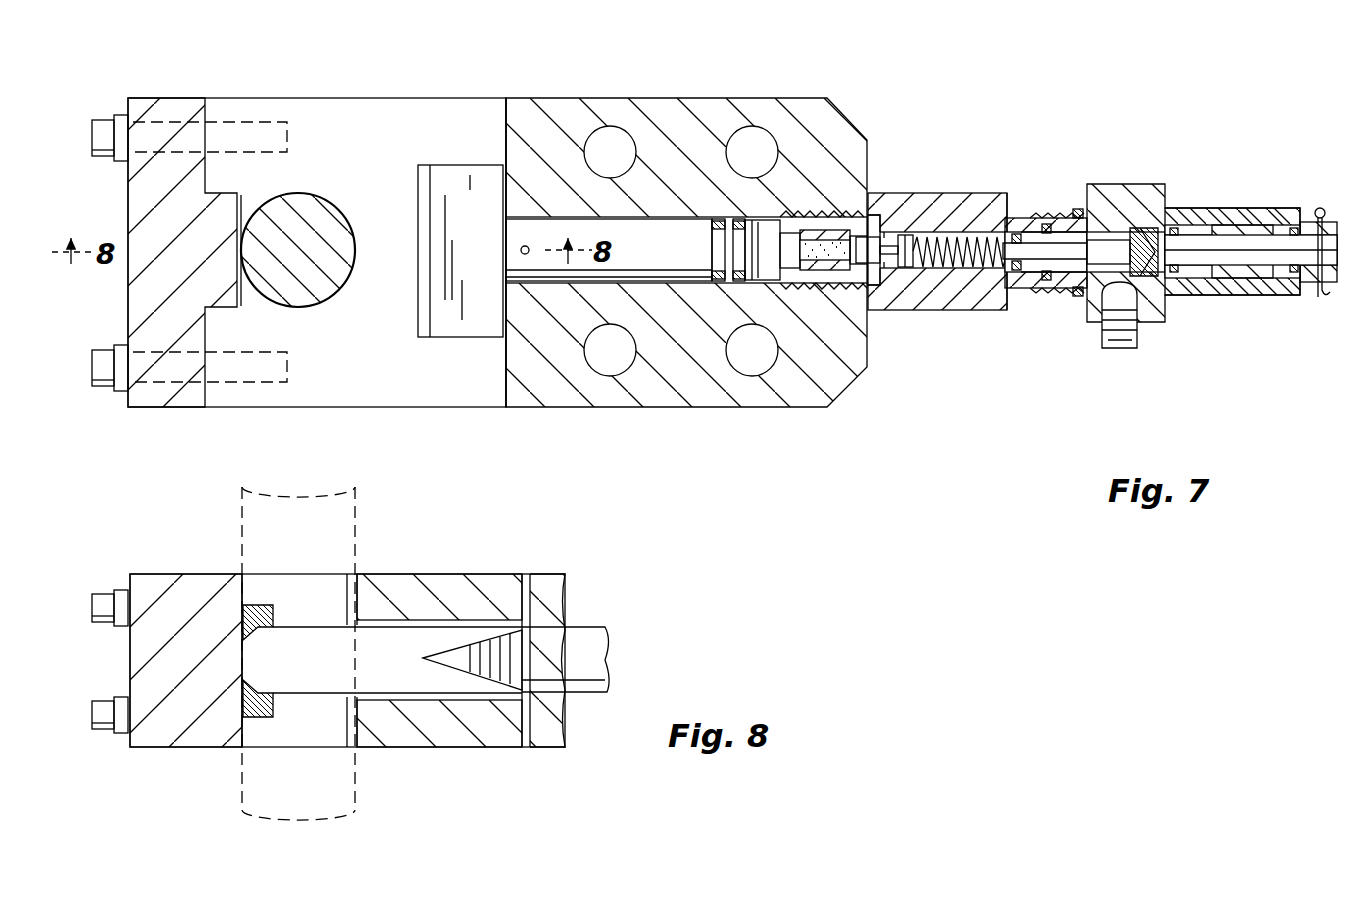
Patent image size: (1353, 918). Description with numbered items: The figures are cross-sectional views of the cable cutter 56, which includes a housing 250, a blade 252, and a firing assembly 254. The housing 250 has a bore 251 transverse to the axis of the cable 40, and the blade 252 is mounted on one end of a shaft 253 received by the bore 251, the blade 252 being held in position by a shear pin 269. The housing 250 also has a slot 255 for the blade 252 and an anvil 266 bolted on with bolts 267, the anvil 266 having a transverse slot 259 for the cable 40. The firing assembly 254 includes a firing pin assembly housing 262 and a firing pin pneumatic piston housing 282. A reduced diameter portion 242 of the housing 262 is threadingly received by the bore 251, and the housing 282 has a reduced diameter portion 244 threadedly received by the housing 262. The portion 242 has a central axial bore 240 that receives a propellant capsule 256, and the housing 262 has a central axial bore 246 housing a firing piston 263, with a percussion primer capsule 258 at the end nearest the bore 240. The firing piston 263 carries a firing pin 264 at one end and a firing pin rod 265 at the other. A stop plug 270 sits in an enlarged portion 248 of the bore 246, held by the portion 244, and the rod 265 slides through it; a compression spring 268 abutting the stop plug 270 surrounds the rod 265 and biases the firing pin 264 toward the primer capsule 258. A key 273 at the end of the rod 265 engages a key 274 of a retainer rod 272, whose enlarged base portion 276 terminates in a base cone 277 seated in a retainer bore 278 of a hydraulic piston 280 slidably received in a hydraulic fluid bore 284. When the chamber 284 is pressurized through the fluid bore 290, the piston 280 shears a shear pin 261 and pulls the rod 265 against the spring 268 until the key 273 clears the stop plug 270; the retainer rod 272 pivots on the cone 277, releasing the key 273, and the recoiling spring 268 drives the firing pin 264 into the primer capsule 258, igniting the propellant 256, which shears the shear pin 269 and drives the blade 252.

In FIG. 7, the cable 40 is at (333, 226).
In FIG. 8, the cable 40 is at (357, 775).
In FIG. 7, the cable cutter 56 is at (550, 92).
In FIG. 7, the central axial bore 240 is at (767, 280).
In FIG. 7, the reduced diameter portion 242 is at (800, 272).
In FIG. 7, the reduced diameter portion 244 is at (1035, 232).
In FIG. 7, the central axial bore 246 is at (880, 300).
In FIG. 7, the enlarged portion 248 is at (1010, 290).
In FIG. 7, the housing 250 is at (562, 408).
In FIG. 8, the housing 250 is at (432, 574).
In FIG. 7, the bore 251 is at (808, 215).
In FIG. 7, the blade 252 is at (452, 165).
In FIG. 8, the blade 252 is at (420, 660).
In FIG. 7, the shaft 253 is at (690, 252).
In FIG. 8, the shaft 253 is at (594, 627).
In FIG. 7, the firing assembly 254 is at (990, 345).
In FIG. 7, the slot 255 is at (368, 392).
In FIG. 8, the slot 255 is at (330, 669).
In FIG. 7, the propellant capsule 256 is at (878, 222).
In FIG. 7, the percussion primer capsule 258 is at (870, 250).
In FIG. 7, the transverse slot 259 is at (252, 208).
In FIG. 8, the transverse slot 259 is at (288, 620).
In FIG. 7, the shear pin 261 is at (1320, 208).
In FIG. 7, the firing pin assembly housing 262 is at (955, 307).
In FIG. 7, the firing piston 263 is at (940, 237).
In FIG. 7, the firing pin 264 is at (893, 268).
In FIG. 7, the firing pin rod 265 is at (982, 245).
In FIG. 7, the anvil 266 is at (178, 100).
In FIG. 8, the anvil 266 is at (180, 573).
In FIG. 7, the bolts 267 is at (88, 120).
In FIG. 7, the spring 268 is at (908, 287).
In FIG. 7, the shear pin 269 is at (515, 250).
In FIG. 8, the shear pin 269 is at (528, 580).
In FIG. 7, the stop plug 270 is at (1014, 230).
In FIG. 7, the retainer rod 272 is at (1078, 210).
In FIG. 7, the key 273 is at (1043, 292).
In FIG. 7, the key 274 is at (1050, 222).
In FIG. 7, the enlarged base portion 276 is at (1102, 200).
In FIG. 7, the base cone 277 is at (1138, 240).
In FIG. 7, the retainer bore 278 is at (1152, 270).
In FIG. 7, the hydraulic piston 280 is at (1200, 262).
In FIG. 7, the firing pin pneumatic piston housing 282 is at (1252, 297).
In FIG. 7, the hydraulic fluid bore 284 is at (1240, 228).
In FIG. 7, the fluid bore 290 is at (1105, 302).